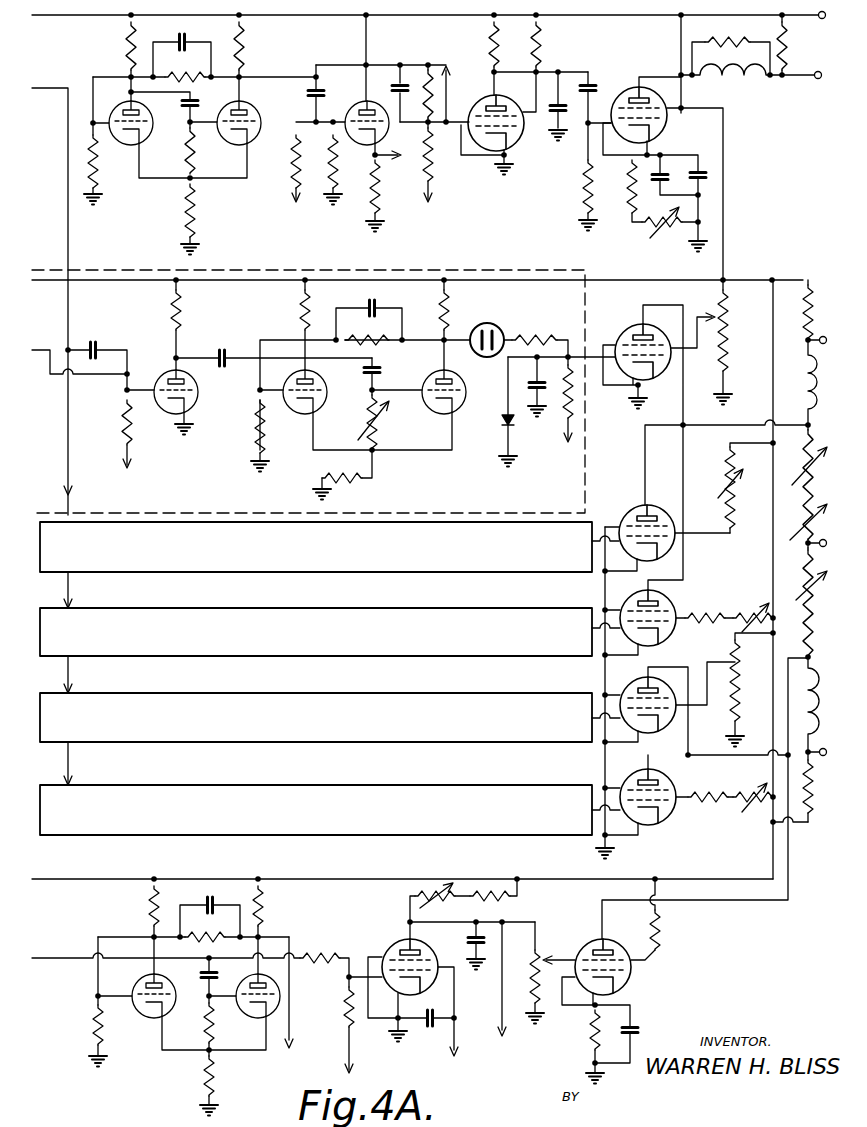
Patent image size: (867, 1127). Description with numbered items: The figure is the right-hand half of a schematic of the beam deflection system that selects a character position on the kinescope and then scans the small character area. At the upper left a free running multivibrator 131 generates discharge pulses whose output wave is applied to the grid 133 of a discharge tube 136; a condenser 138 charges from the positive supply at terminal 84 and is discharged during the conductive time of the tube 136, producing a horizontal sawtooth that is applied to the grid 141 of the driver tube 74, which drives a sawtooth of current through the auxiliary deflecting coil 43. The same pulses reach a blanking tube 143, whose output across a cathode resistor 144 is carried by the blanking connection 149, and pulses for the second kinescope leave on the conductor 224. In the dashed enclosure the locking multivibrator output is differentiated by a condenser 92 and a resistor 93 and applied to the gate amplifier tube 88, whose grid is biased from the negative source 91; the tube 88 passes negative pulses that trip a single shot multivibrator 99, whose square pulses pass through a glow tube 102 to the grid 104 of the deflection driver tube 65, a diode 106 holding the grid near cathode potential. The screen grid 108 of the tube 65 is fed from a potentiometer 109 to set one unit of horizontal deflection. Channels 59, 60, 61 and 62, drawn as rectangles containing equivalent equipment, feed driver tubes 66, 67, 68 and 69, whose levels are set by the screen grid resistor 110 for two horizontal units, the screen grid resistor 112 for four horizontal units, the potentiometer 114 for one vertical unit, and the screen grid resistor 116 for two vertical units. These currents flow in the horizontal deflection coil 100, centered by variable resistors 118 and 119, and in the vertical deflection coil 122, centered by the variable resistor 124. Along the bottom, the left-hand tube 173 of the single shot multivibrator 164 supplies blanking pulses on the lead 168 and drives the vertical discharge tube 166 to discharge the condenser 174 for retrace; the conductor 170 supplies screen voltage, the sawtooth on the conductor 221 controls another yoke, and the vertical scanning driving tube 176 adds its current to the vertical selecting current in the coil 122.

The free running multivibrator 131 is at (290, 57).
The conductor 224 is at (447, 66).
The blanking tube 143 is at (356, 103).
The blanking connection 149 is at (405, 160).
The cathode resistor 144 is at (372, 214).
The discharge tube 136 is at (482, 96).
The grid 133 is at (502, 150).
The condenser 138 is at (592, 58).
The driver tube 74 is at (615, 86).
The grid 141 is at (669, 120).
The auxiliary deflecting coil 43 is at (733, 84).
The terminal 84 is at (798, 45).
The condenser 92 is at (95, 340).
The resistor 93 is at (118, 422).
The source of negative potential 91 is at (132, 466).
The gate amplifier tube 88 is at (164, 376).
The single shot multivibrator 99 is at (446, 454).
The glow tube 102 is at (487, 323).
The diode 106 is at (502, 442).
The deflection driver tube 65 is at (619, 333).
The screen grid 108 is at (657, 398).
The grid 104 is at (664, 417).
The potentiometer 109 is at (730, 325).
The variable resistor 118 is at (773, 424).
The driver tube 66 is at (648, 505).
The screen grid resistor 110 is at (727, 480).
The driver tube 67 is at (645, 619).
The screen grid resistor 112 is at (730, 612).
The potentiometer 114 is at (740, 662).
The driver tube 68 is at (662, 672).
The driver tube 69 is at (662, 825).
The screen grid resistor 116 is at (765, 806).
The horizontal deflection coil 100 is at (808, 360).
The variable resistor 119 is at (806, 486).
The variable resistor 124 is at (806, 566).
The vertical deflection coil 122 is at (806, 715).
The channel 59 is at (352, 576).
The channel 60 is at (376, 656).
The channel 61 is at (400, 742).
The channel 62 is at (430, 835).
The left-hand tube 173 is at (156, 1020).
The single shot multivibrator 164 is at (200, 1060).
The lead 168 is at (290, 1062).
The vertical discharge tube 166 is at (398, 941).
The conductor 170 is at (452, 1050).
The condenser 174 is at (470, 940).
The conductor 221 is at (502, 1034).
The vertical scanning driving tube 176 is at (632, 985).